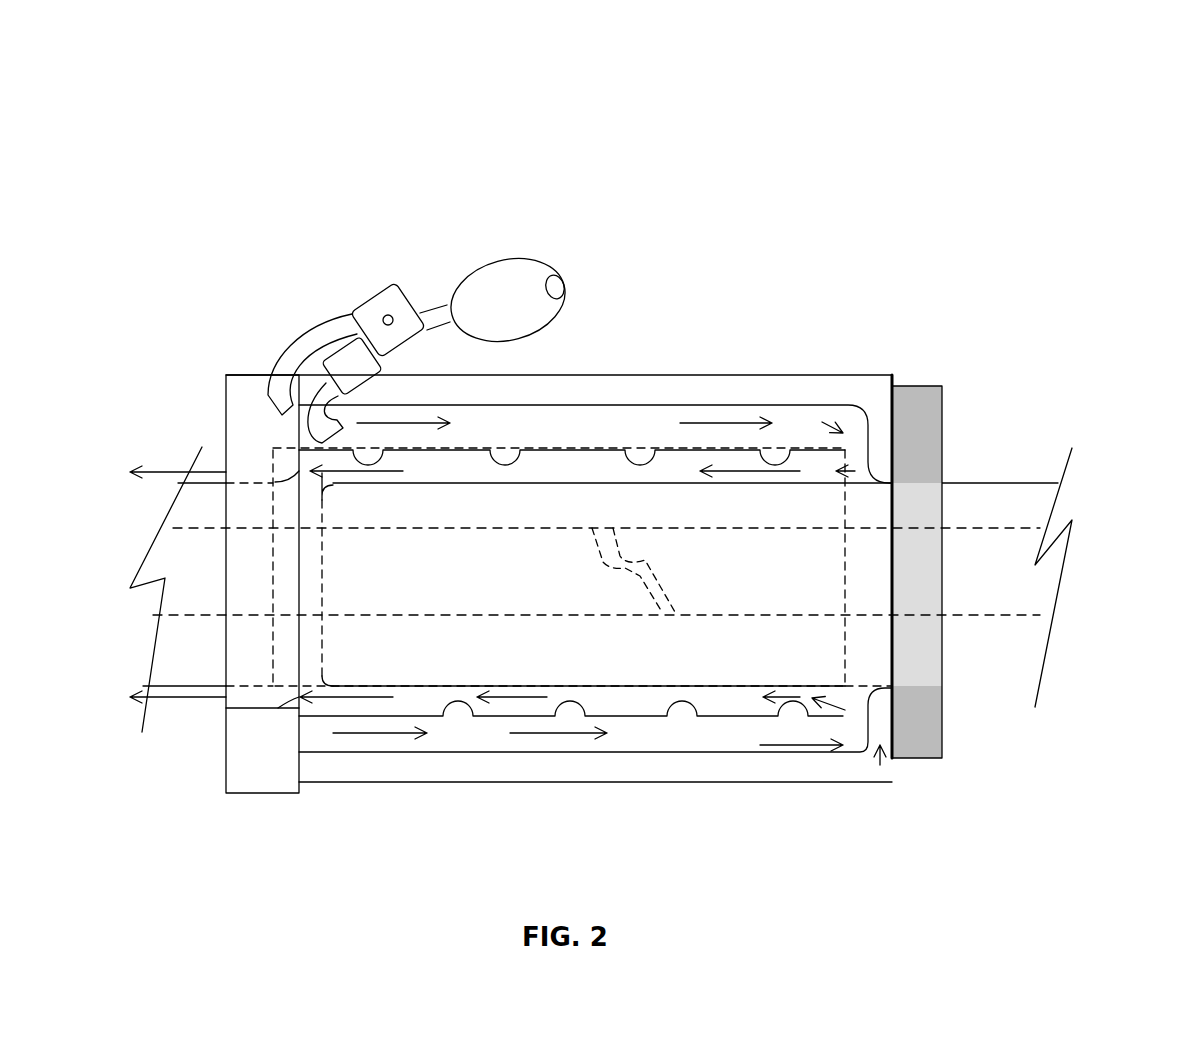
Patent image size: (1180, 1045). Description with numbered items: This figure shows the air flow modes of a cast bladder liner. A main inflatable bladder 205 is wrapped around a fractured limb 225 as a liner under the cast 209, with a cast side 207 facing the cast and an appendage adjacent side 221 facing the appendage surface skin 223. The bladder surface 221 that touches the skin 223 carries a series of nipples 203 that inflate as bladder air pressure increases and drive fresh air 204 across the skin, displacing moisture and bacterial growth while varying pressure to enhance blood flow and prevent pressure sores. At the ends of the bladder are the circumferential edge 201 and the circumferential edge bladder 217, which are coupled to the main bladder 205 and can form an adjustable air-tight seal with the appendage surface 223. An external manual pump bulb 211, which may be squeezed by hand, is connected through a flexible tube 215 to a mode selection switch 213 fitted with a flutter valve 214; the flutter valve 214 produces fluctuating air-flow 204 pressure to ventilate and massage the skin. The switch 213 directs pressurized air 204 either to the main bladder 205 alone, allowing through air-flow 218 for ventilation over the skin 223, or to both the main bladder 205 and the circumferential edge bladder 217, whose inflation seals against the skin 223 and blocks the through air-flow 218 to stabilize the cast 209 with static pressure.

The circumferential edge1 / longitudinal edge1 201 is at (918, 420).
The nipples 203 is at (775, 460).
The fluctuating air-flow / pressurized air 204 is at (738, 470).
The main inflatable bladder 205 is at (595, 433).
The cast side 207 is at (572, 412).
The cast 209 is at (548, 384).
The manual pump bulb 211 is at (512, 278).
The mode selection switch 213 is at (393, 287).
The flutter valve 214 is at (357, 363).
The flexible tube 215 is at (440, 313).
The circumferential edge bladder 217 is at (248, 422).
The through air-flow 218 is at (165, 700).
The bladder surface (appendage adjacent side) 221 is at (630, 722).
The appendage surface skin 223 is at (713, 686).
The fractured limb 225 is at (965, 567).